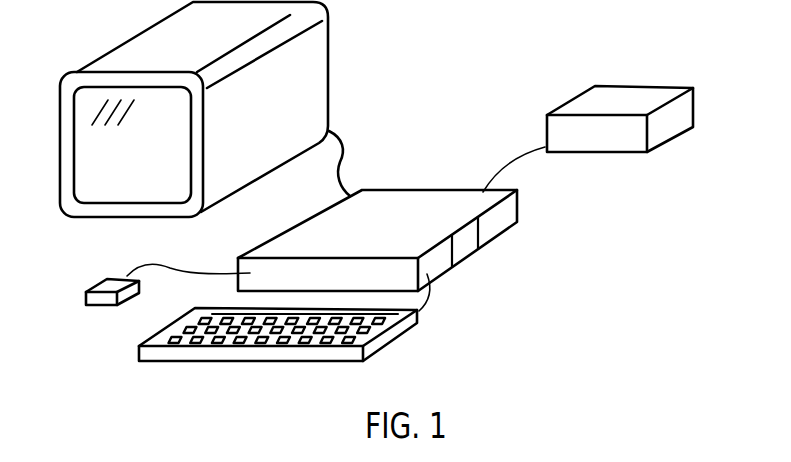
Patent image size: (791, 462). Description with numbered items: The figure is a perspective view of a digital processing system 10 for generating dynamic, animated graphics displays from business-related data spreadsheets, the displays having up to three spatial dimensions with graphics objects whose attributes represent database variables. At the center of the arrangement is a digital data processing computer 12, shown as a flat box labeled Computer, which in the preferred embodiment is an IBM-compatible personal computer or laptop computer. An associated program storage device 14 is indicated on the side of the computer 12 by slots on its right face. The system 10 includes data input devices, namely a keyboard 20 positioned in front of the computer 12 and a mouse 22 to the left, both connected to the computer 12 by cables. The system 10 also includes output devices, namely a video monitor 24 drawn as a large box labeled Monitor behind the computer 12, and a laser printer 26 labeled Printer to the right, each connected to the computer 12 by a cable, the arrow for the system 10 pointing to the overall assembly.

The system 10 is at (583, 234).
The digital data processing computer 12 is at (412, 193).
The program storage device 14 is at (465, 240).
The keyboard 20 is at (400, 333).
The mouse 22 is at (110, 285).
The video monitor 24 is at (315, 67).
The laser printer 26 is at (587, 103).